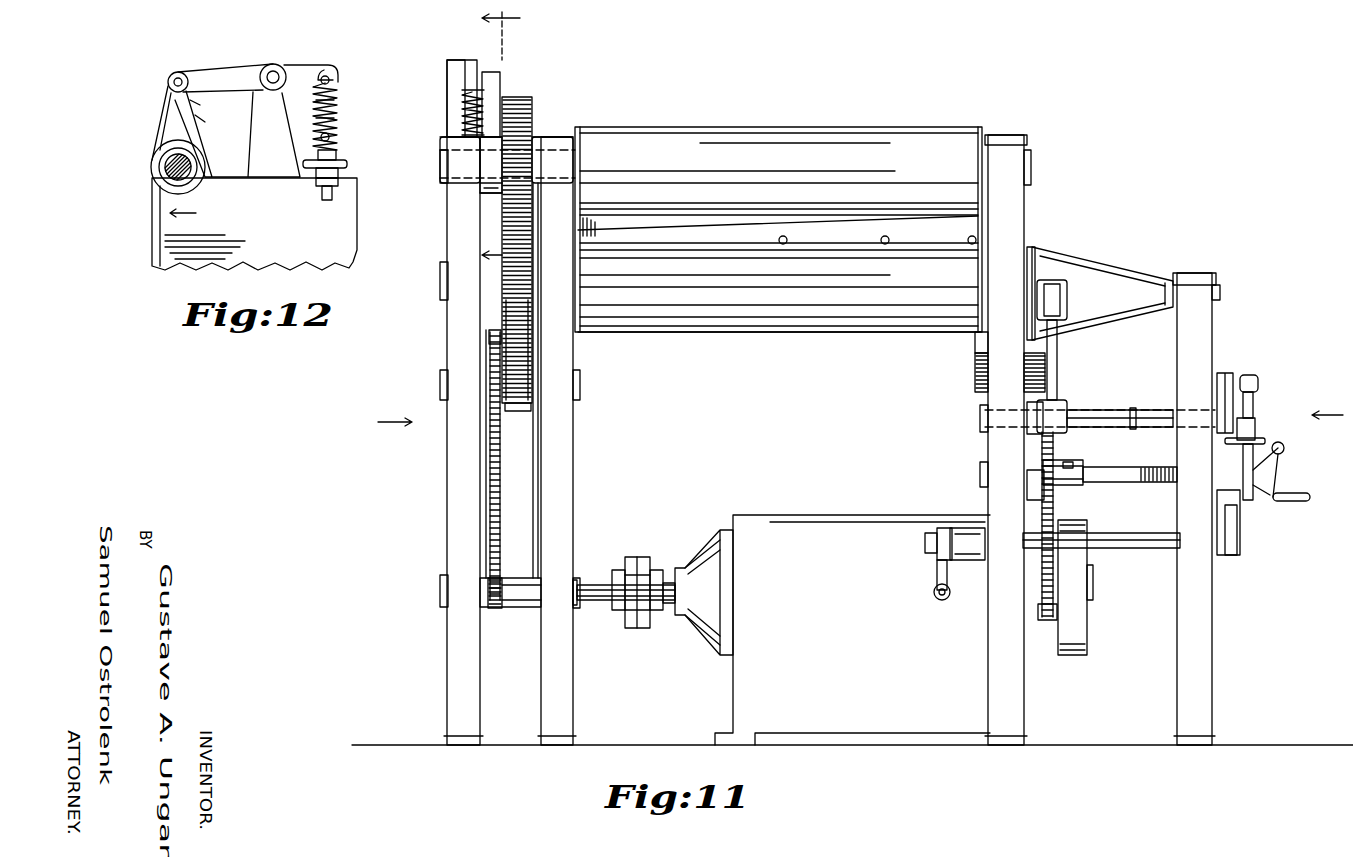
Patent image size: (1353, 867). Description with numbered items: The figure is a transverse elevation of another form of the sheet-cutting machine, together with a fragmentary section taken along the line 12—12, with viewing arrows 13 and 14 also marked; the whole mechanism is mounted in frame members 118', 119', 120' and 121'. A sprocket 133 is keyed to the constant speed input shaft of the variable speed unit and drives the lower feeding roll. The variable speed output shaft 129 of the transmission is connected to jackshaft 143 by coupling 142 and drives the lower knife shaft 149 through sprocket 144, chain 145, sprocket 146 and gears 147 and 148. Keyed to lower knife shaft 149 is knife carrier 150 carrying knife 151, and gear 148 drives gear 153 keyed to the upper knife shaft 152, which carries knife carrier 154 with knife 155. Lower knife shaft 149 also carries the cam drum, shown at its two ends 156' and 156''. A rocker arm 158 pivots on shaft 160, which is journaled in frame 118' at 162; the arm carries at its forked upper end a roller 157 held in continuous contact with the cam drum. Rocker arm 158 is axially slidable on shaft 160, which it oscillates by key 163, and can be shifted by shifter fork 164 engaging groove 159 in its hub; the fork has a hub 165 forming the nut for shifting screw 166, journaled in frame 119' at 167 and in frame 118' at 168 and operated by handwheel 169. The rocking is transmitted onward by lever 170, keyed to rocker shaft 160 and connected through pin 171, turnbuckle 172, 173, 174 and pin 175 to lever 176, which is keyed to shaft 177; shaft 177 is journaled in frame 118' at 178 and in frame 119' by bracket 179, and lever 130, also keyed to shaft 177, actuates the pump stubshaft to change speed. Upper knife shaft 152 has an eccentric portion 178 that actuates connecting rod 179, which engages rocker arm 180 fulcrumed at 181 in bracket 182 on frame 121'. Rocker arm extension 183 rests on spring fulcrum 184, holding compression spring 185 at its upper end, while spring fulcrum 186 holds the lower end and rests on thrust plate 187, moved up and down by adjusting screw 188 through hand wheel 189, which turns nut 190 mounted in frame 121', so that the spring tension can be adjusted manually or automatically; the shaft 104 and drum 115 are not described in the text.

In FIG. 11, the section line 12— 12 is at (504, 135).
In FIG. 11, the view direction arrow 13 is at (395, 434).
In FIG. 11, the view direction arrow 14 is at (1327, 406).
In FIG. 11, the adjusting nut 104 is at (1068, 463).
In FIG. 11, the drum 115 is at (1087, 630).
In FIG. 11, the frame member 118' is at (1214, 509).
In FIG. 11, the frame member 119' is at (1024, 440).
In FIG. 11, the frame member 120' is at (579, 441).
In FIG. 12, the frame member 121' is at (254, 232).
In FIG. 11, the frame member 121' is at (485, 402).
In FIG. 11, the variable speed output shaft 129 is at (668, 607).
In FIG. 11, the lever 130 is at (937, 571).
In FIG. 11, the sprocket 133 is at (1041, 618).
In FIG. 11, the coupling 142 is at (632, 629).
In FIG. 11, the jackshaft 143 is at (595, 602).
In FIG. 11, the sprocket 144 is at (495, 608).
In FIG. 11, the chain 145 is at (497, 503).
In FIG. 11, the sprocket 146 is at (497, 405).
In FIG. 11, the gear 147 is at (525, 410).
In FIG. 11, the gear 148 is at (532, 346).
In FIG. 11, the lower knife shaft 149 is at (440, 288).
In FIG. 11, the knife carrier 150 is at (720, 333).
In FIG. 11, the knife 151 is at (733, 243).
In FIG. 12, the upper knife shaft 152 is at (172, 168).
In FIG. 11, the upper knife shaft 152 is at (440, 176).
In FIG. 11, the gear 153 is at (532, 102).
In FIG. 11, the knife carrier 154 is at (770, 128).
In FIG. 11, the knife 155 is at (683, 222).
In FIG. 11, the cam drum 156' is at (1100, 279).
In FIG. 11, the cam drum 156'' is at (1174, 273).
In FIG. 11, the roller 157 is at (1053, 283).
In FIG. 11, the rocker arm 158 is at (1103, 272).
In FIG. 11, the groove 159 is at (1062, 405).
In FIG. 11, the shaft 160 is at (1110, 410).
In FIG. 11, the journal 162 is at (1198, 411).
In FIG. 11, the key 163 is at (1143, 422).
In FIG. 11, the shifter fork 164 is at (998, 430).
In FIG. 11, the hub 165 is at (1066, 485).
In FIG. 11, the shifting screw 166 is at (1125, 484).
In FIG. 11, the journal 167 is at (988, 478).
In FIG. 11, the journal 168 is at (1175, 487).
In FIG. 11, the handwheel 169 is at (1283, 445).
In FIG. 11, the lever 170 is at (1222, 374).
In FIG. 11, the pin 171 is at (1256, 380).
In FIG. 11, the turnbuckle 172 is at (1253, 402).
In FIG. 11, the turnbuckle 173 is at (1255, 430).
In FIG. 11, the turnbuckle 174 is at (1238, 515).
In FIG. 11, the pin 175 is at (1262, 500).
In FIG. 11, the lever 176 is at (1093, 580).
In FIG. 11, the shaft 177 is at (1145, 549).
In FIG. 12, the eccentric or crank portion 178 is at (175, 185).
In FIG. 11, the eccentric or crank portion 178 is at (482, 195).
In FIG. 12, the connecting rod 179 is at (160, 127).
In FIG. 11, the connecting rod 179 is at (492, 97).
In FIG. 12, the rocker arm 180 is at (235, 56).
In FIG. 12, the fulcrum 181 is at (282, 66).
In FIG. 12, the bracket 182 is at (258, 105).
In FIG. 11, the bracket 182 is at (455, 113).
In FIG. 12, the rocker arm extension 183 is at (335, 66).
In FIG. 12, the spring fulcrum 184 is at (333, 84).
In FIG. 12, the compression spring 185 is at (337, 105).
In FIG. 11, the compression spring 185 is at (462, 100).
In FIG. 12, the spring fulcrum 186 is at (338, 125).
In FIG. 12, the thrust plate 187 is at (331, 140).
In FIG. 12, the adjusting screw 188 is at (322, 192).
In FIG. 12, the hand wheel 189 is at (347, 163).
In FIG. 12, the nut 190 is at (338, 182).